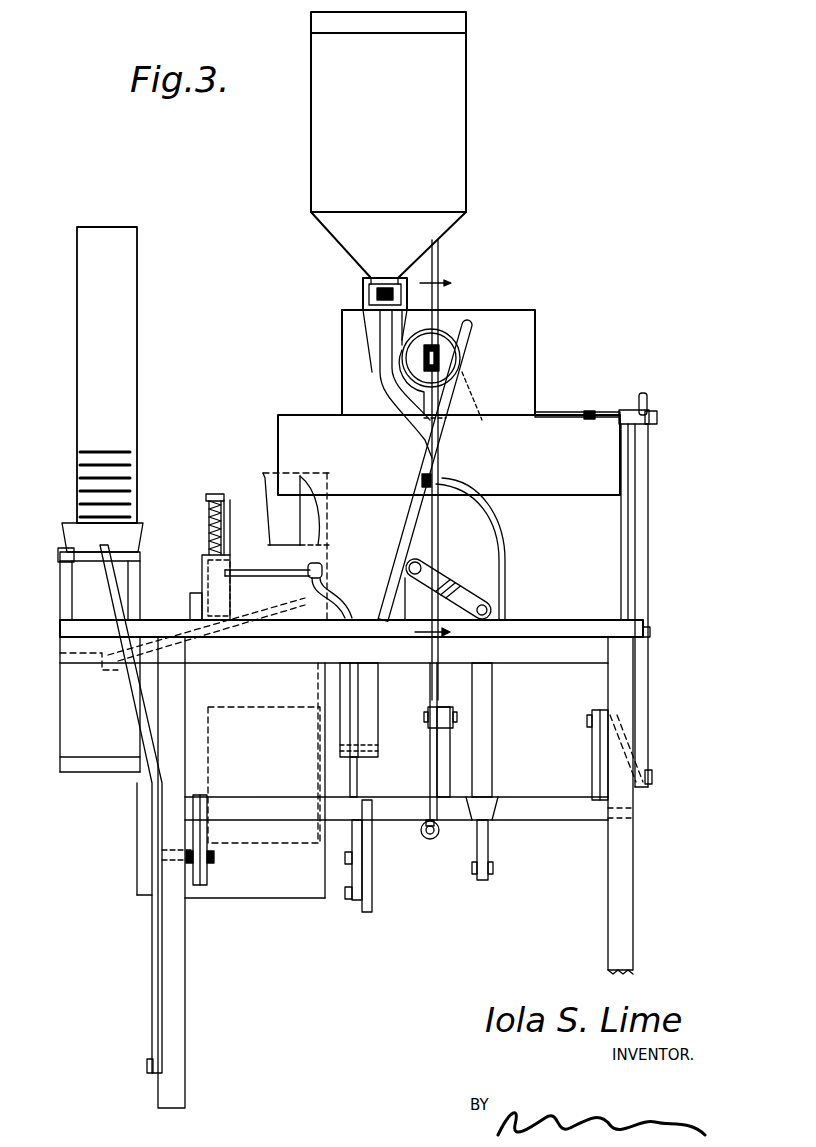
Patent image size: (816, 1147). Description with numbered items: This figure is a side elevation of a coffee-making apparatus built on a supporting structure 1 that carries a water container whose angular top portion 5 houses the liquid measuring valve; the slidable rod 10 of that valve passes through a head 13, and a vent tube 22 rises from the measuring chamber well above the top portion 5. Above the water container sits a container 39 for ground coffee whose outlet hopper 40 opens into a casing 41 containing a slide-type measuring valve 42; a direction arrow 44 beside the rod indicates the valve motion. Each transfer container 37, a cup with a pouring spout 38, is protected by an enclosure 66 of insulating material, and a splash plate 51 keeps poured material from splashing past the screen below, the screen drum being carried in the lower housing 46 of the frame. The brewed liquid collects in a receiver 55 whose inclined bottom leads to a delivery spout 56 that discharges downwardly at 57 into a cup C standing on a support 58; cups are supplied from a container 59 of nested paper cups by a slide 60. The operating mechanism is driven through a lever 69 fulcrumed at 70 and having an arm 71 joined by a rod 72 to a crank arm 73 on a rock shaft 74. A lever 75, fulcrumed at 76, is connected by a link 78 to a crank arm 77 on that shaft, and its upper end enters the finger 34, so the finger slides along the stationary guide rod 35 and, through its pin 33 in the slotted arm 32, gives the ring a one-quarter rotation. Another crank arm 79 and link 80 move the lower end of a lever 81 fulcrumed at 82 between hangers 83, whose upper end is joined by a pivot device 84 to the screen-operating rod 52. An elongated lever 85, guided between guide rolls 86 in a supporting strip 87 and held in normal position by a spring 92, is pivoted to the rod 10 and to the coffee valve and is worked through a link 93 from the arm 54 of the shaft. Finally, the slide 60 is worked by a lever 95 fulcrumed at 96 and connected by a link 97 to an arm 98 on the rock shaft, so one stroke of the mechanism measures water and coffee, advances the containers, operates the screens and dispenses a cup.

The supporting structure 1 is at (627, 680).
The angular top portion 5 is at (535, 327).
The slidable rod 10 is at (440, 346).
The head 13 is at (424, 346).
The vent tube 22 is at (442, 272).
The longitudinally slotted arm 32 is at (556, 413).
The pin 33 is at (587, 419).
The finger 34 is at (635, 410).
The stationary guide rod 35 is at (650, 424).
The transfer container 37 is at (272, 496).
The pouring spout 38 is at (268, 545).
The container 39 is at (466, 114).
The outlet hopper 40 is at (410, 222).
The casing 41 is at (368, 280).
The measuring valve 42 is at (363, 293).
The direction arrow 44 is at (436, 452).
The frame housing 46 is at (280, 893).
The splash plate 51 is at (232, 500).
The screen-operating rod 52 is at (322, 566).
The arm 54 is at (450, 752).
The receiver 55 is at (200, 596).
The delivery spout 56 is at (190, 615).
The discharge point 57 is at (58, 656).
The support 58 is at (72, 766).
The container 59 is at (137, 360).
The slide 60 is at (82, 550).
The enclosure 66 is at (278, 418).
The lever 69 is at (462, 450).
The fulcrum 70 is at (408, 565).
The arm 71 is at (472, 594).
The rod 72 is at (492, 724).
The crank arm 73 is at (492, 848).
The rock shaft 74 is at (520, 806).
The lever 75 is at (648, 572).
The fulcrum 76 is at (652, 632).
The crank arm 77 is at (590, 738).
The link 78 is at (640, 765).
The crank arm 79 is at (372, 843).
The link 80 is at (353, 895).
The lever 81 is at (358, 778).
The fulcrum 82 is at (372, 749).
The hangers 83 is at (370, 713).
The pivot device 84 is at (308, 568).
The elongated lever 85 is at (392, 372).
The guide rolls 86 is at (422, 478).
The supporting strip 87 is at (462, 486).
The spring 92 is at (430, 840).
The link 93 is at (438, 710).
The lever 95 is at (150, 775).
The fulcrum 96 is at (147, 1066).
The link 97 is at (207, 857).
The arm 98 is at (207, 835).
The cup C is at (118, 458).